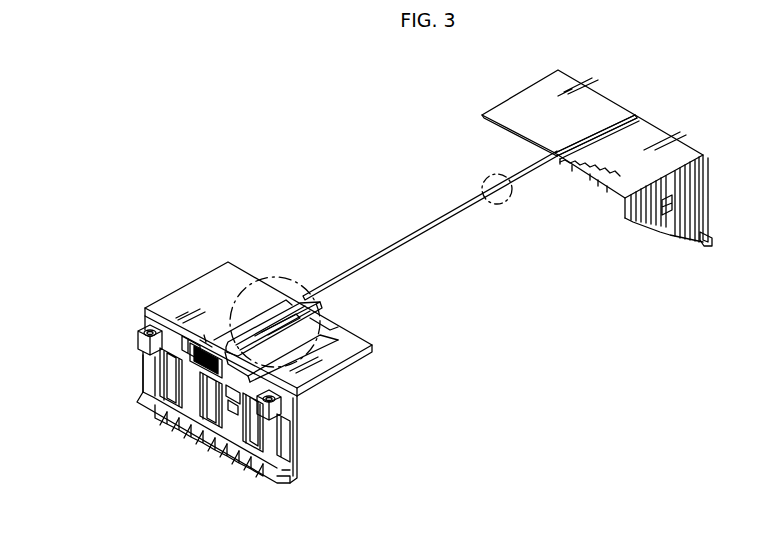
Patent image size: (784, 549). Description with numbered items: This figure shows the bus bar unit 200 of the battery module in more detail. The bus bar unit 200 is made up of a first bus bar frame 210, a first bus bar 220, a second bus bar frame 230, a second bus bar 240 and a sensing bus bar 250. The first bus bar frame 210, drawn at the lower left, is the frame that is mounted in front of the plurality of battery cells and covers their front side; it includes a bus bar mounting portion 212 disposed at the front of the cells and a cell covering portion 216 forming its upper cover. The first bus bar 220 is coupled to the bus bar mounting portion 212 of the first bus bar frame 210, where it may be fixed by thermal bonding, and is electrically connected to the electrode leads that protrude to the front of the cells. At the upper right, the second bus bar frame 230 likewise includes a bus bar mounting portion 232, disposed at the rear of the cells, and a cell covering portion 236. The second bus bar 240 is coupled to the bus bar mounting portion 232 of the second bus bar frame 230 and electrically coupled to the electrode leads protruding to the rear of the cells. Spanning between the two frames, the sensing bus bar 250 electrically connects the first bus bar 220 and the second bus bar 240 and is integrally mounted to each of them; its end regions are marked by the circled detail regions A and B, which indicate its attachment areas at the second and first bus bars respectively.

The bus bar unit 200 is at (282, 164).
The first bus bar frame 210 is at (322, 410).
The bus bar mounting portion 212 is at (137, 400).
The cell covering portion 216 is at (166, 303).
The first bus bar 220 is at (294, 472).
The second bus bar frame 230 is at (722, 251).
The bus bar mounting portion 232 is at (657, 218).
The cell covering portion 236 is at (602, 166).
The second bus bar 240 is at (724, 188).
The sensing bus bar 250 is at (424, 262).
The detail region A is at (500, 177).
The detail region B is at (300, 298).